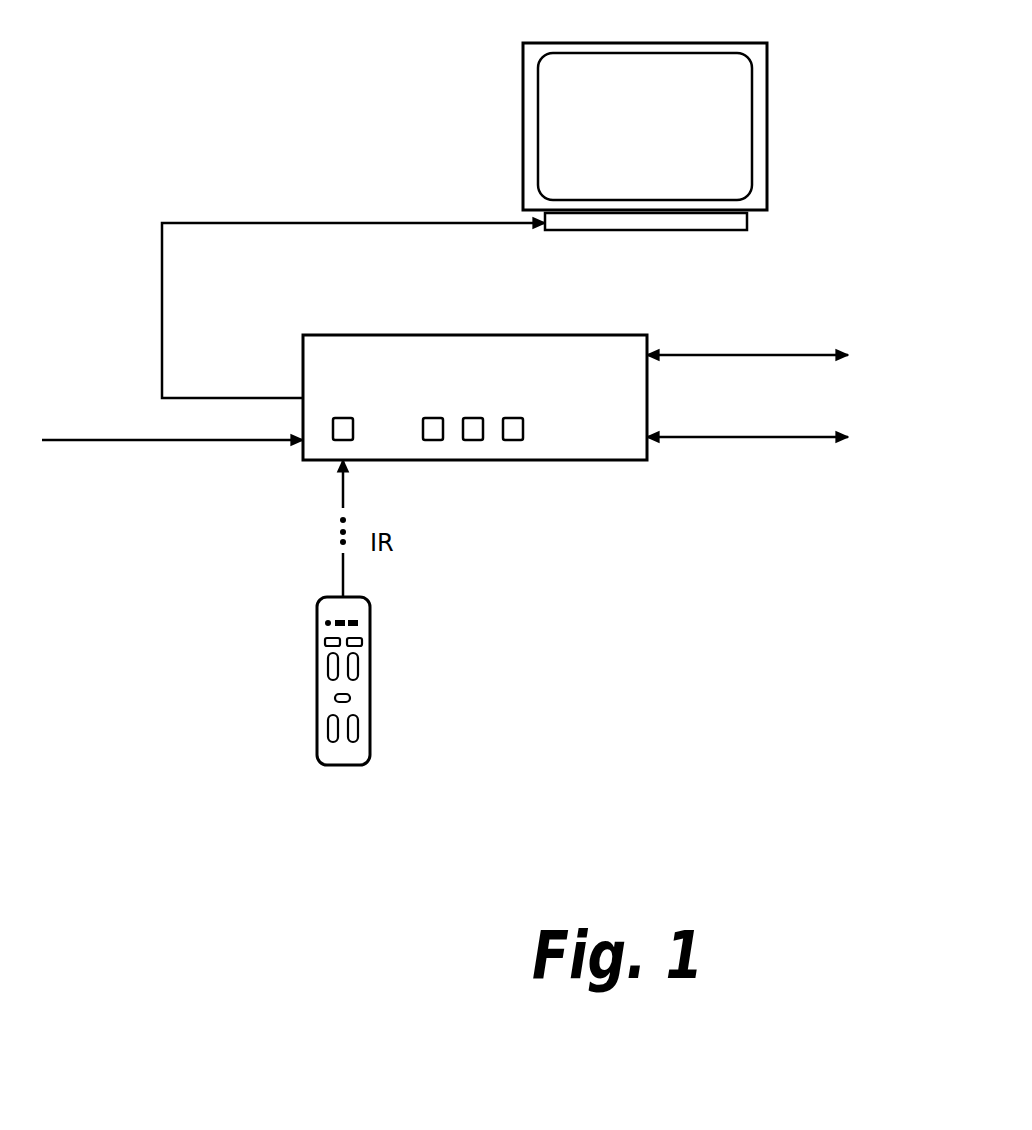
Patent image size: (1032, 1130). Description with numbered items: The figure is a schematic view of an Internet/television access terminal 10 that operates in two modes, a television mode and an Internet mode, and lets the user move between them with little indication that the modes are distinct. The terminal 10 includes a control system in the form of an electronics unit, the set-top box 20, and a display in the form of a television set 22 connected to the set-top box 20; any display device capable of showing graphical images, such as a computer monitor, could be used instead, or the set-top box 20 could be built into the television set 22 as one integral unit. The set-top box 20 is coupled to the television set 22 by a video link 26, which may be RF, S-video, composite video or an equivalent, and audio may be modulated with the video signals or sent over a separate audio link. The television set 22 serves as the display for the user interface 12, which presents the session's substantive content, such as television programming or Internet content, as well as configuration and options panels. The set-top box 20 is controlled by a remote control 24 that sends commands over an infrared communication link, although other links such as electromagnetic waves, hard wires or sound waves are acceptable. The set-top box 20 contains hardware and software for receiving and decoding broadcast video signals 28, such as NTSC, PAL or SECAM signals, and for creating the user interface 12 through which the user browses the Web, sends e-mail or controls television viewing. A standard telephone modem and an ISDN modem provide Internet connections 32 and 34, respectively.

The Internet access terminal 10 is at (262, 118).
The user interface 12 is at (683, 116).
The set-top box 20 is at (627, 442).
The television set 22 is at (726, 185).
The remote control 24 is at (343, 753).
The video link 26 is at (162, 313).
The broadcast video signals 28 is at (210, 442).
The Internet connection 32 is at (803, 355).
The Internet connection 34 is at (798, 437).